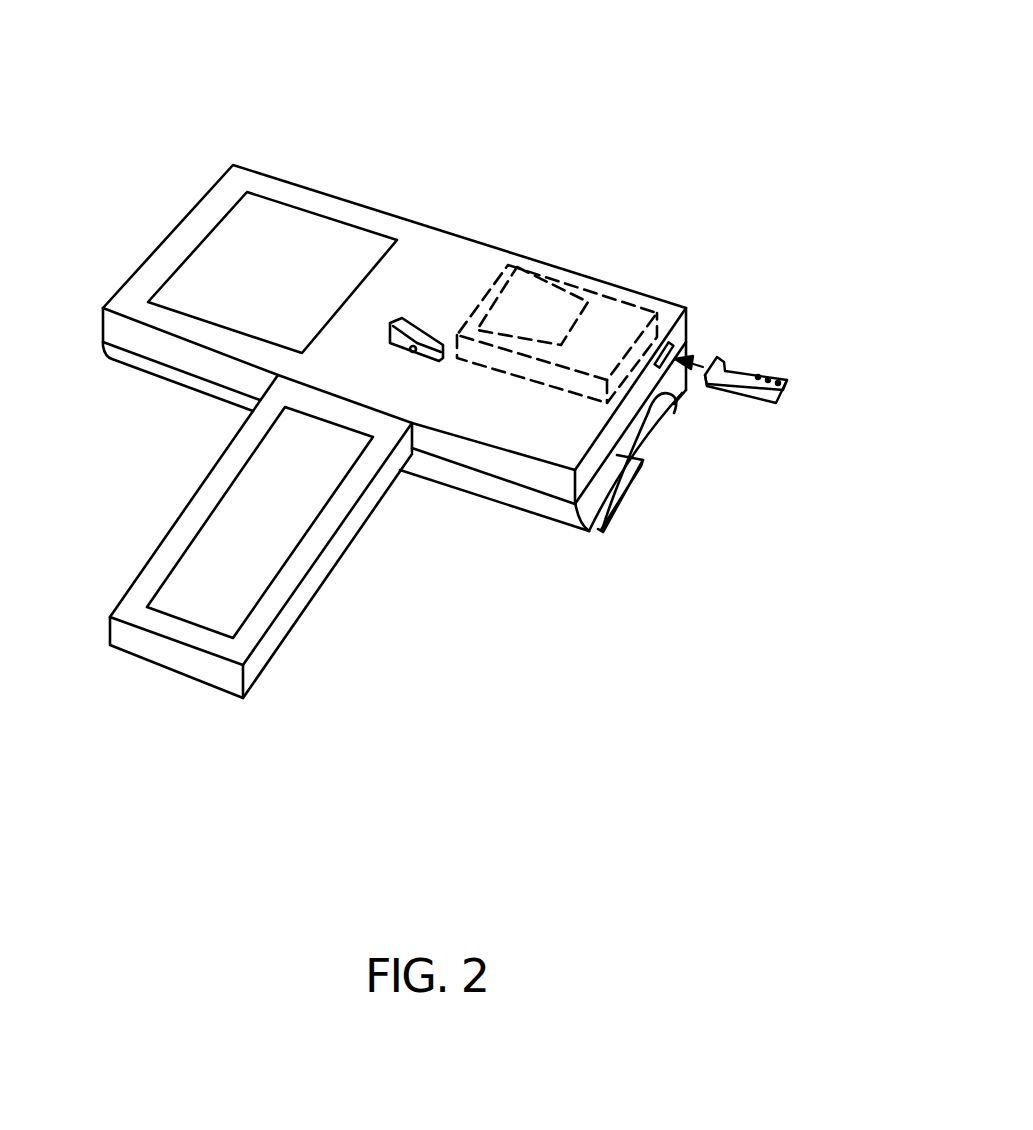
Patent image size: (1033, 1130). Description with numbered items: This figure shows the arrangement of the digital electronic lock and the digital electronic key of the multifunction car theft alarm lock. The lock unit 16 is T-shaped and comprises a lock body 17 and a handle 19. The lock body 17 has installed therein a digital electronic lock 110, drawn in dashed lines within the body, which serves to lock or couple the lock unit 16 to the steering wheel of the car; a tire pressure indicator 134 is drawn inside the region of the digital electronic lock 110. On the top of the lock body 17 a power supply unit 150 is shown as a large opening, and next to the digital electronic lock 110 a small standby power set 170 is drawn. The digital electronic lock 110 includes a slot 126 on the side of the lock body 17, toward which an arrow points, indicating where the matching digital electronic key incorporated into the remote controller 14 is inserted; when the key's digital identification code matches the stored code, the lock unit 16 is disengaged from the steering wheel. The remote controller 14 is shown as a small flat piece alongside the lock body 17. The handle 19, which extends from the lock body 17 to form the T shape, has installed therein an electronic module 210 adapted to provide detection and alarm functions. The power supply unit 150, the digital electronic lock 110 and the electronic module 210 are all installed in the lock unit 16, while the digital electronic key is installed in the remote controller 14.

The lock unit 16 is at (763, 45).
The lock body 17 is at (307, 191).
The power supply unit 150 is at (197, 257).
The standby power set 170 is at (420, 325).
The digital electronic lock 110 is at (572, 283).
The tire pressure indicator 134 is at (508, 265).
The slot 126 is at (672, 343).
The remote controller 14 is at (763, 375).
The handle 19 is at (130, 609).
The electronic module 210 is at (307, 530).